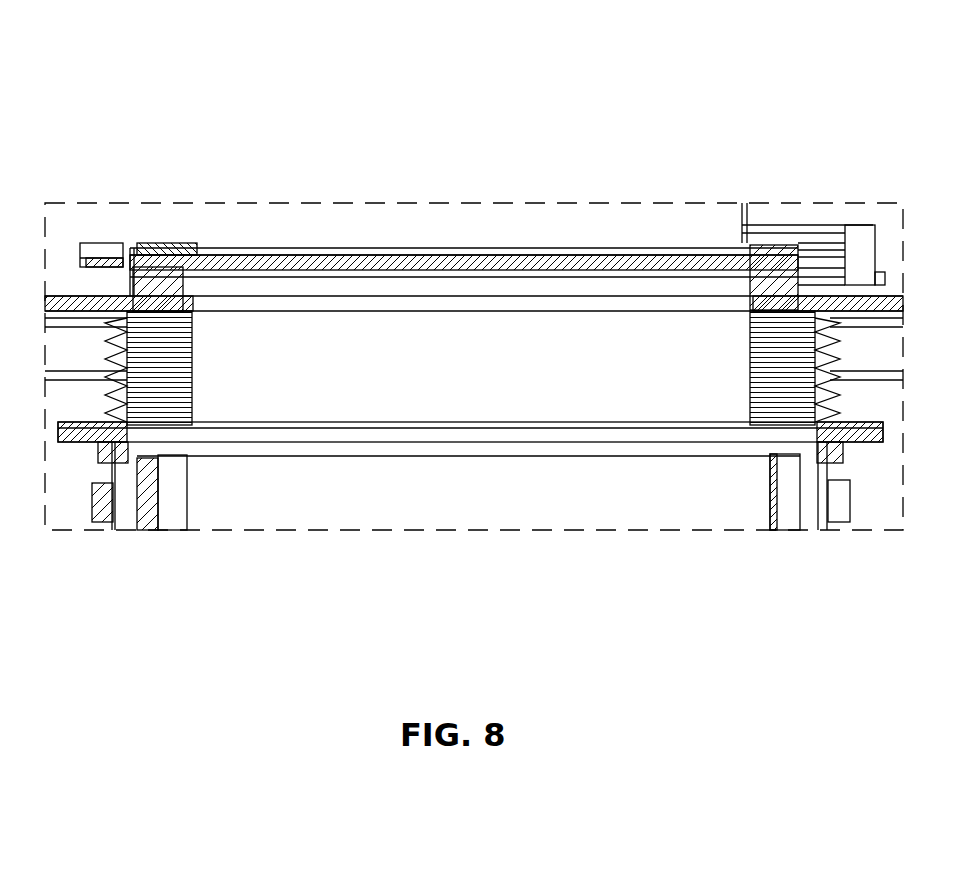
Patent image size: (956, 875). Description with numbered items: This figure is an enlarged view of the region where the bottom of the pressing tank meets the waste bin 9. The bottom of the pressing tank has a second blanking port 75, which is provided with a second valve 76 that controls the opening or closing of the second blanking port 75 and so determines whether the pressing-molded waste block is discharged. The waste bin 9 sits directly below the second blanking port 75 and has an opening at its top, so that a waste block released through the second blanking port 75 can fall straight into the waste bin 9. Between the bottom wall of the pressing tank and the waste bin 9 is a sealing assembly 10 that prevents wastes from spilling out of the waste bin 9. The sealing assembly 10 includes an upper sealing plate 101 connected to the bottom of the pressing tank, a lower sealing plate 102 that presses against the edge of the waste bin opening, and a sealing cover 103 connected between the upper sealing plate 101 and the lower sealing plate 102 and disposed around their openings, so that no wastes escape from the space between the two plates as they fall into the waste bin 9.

The waste bin 9 is at (147, 520).
The sealing assembly 10 is at (190, 305).
The second blanking port 75 is at (537, 250).
The second valve 76 is at (423, 268).
The upper sealing plate 101 is at (57, 292).
The lower sealing plate 102 is at (63, 443).
The sealing cover 103 is at (187, 250).